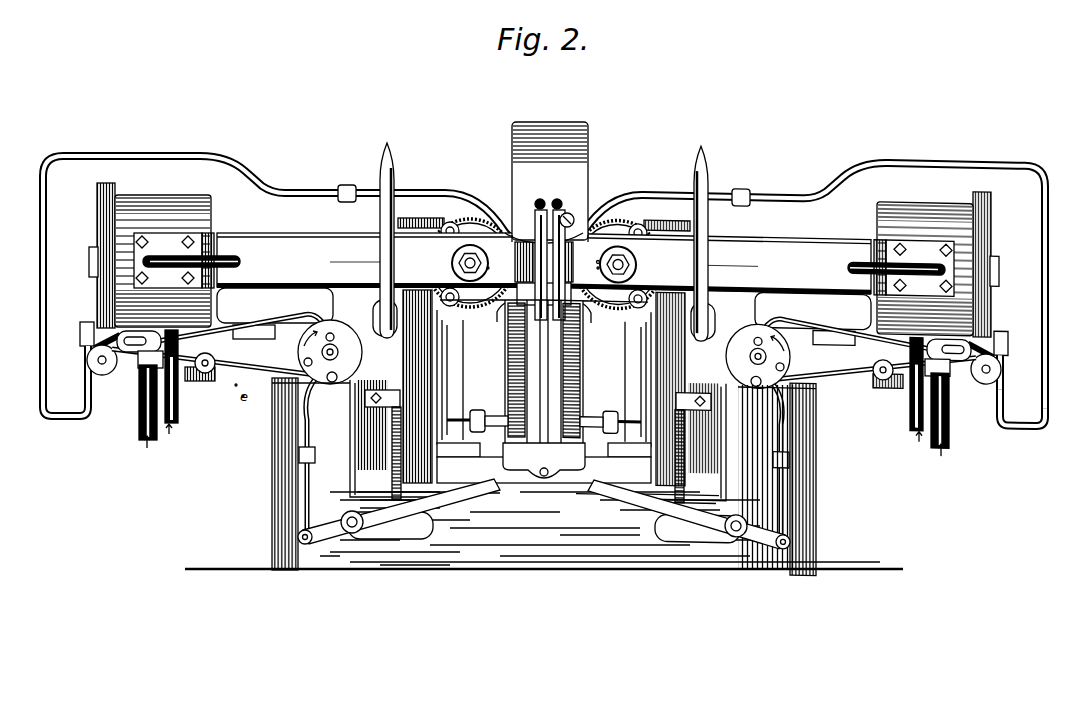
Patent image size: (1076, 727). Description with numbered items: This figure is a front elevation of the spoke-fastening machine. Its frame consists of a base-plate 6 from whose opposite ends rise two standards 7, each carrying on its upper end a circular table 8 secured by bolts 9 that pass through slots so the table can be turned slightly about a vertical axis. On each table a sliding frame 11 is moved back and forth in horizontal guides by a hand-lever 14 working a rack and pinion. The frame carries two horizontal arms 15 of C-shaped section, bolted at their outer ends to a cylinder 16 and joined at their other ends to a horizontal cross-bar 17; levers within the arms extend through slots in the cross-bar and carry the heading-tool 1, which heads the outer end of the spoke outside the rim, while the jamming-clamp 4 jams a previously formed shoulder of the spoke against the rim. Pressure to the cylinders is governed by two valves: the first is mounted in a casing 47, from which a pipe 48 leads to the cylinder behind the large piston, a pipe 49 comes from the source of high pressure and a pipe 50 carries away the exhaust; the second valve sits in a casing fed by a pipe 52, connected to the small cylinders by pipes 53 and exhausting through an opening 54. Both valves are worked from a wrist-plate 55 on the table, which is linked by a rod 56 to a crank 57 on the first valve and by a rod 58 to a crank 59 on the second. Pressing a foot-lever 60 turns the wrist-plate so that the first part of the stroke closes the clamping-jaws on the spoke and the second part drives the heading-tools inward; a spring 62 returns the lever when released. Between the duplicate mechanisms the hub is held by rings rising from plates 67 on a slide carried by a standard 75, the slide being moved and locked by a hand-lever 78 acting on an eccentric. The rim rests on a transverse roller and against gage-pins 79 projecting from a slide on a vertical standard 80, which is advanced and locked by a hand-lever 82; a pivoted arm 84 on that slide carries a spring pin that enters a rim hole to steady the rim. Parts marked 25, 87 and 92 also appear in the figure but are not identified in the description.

The heading-tool 1 is at (578, 240).
The jamming-clamp 4 is at (520, 208).
The base-plate 6 is at (560, 538).
The standard 7 is at (350, 420).
The circular table 8 is at (270, 395).
The bolts 9 is at (690, 360).
The sliding frame 11 is at (265, 316).
The hand-lever 14 is at (370, 275).
The horizontal arms 15 is at (284, 256).
The cylinder 16 is at (165, 229).
The cross-bar 17 is at (452, 269).
The sector gear 25 is at (544, 264).
The valve casing 47 is at (135, 368).
The pipe 48 is at (88, 326).
The pipe 49 is at (550, 403).
The exhaust pipe 50 is at (544, 416).
The pipe 52 is at (544, 386).
The pipes 53 is at (245, 320).
The exhaust opening 54 is at (236, 385).
The wrist-plate 55 is at (544, 354).
The rod 56 is at (243, 396).
The crank 57 is at (86, 347).
The rod 58 is at (544, 325).
The crank 59 is at (544, 382).
The foot-lever 60 is at (544, 514).
The spring 62 is at (390, 481).
The plate 67 is at (546, 329).
The standard 75 is at (455, 370).
The hand-lever 78 is at (508, 412).
The gage-pins 79 is at (597, 280).
The vertical standard 80 is at (544, 379).
The hand-lever 82 is at (550, 253).
The arm 84 is at (571, 211).
The gear 87 is at (490, 280).
The gear 92 is at (598, 262).